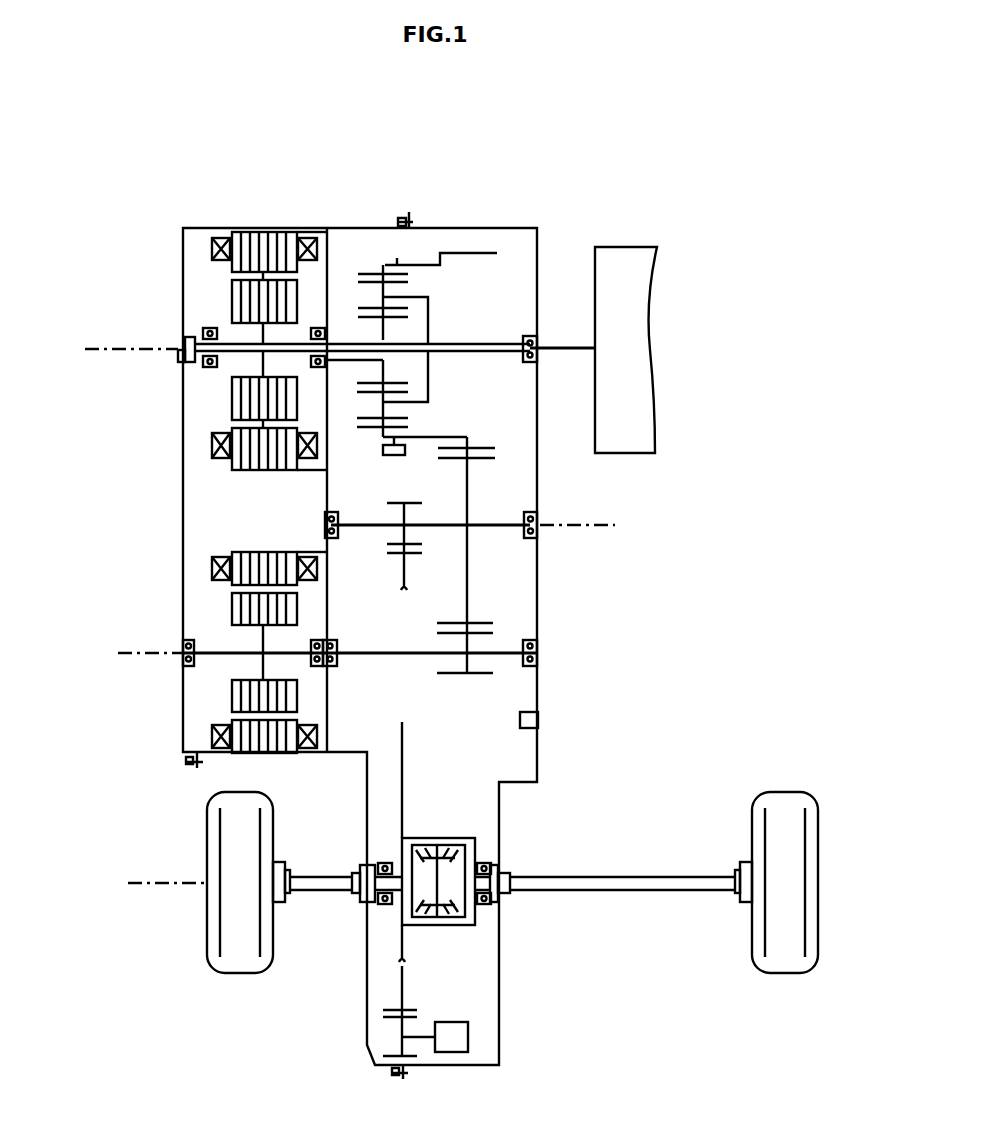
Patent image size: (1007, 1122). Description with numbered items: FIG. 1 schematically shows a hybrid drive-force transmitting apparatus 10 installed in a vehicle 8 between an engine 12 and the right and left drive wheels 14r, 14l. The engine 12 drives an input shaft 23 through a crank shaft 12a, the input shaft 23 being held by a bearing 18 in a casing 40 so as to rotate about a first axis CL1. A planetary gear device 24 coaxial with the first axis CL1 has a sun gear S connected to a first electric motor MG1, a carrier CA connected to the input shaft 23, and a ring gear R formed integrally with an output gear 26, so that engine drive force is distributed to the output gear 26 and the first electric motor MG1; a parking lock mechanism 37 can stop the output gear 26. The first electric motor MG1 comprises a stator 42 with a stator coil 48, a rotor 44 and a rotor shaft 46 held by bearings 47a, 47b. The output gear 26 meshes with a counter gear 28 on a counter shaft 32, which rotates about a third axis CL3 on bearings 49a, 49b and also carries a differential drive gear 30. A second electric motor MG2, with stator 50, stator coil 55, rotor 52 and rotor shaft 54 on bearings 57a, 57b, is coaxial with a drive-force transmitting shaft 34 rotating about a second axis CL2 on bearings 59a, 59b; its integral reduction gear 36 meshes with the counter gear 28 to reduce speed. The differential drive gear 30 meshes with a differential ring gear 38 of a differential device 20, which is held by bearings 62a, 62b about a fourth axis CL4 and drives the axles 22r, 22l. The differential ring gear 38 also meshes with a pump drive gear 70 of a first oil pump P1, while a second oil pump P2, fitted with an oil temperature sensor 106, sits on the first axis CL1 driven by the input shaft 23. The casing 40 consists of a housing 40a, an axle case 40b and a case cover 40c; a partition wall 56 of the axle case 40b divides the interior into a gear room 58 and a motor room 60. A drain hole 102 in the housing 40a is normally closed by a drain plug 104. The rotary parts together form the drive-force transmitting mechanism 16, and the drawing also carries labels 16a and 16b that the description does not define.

The vehicle 8 is at (598, 116).
The drive-force transmitting apparatus 10 is at (414, 160).
The engine 12 is at (655, 450).
The crank shaft 12a is at (561, 345).
The left drive wheel 14l is at (240, 962).
The right drive wheel 14r is at (780, 962).
The drive-force transmitting mechanism 16 is at (510, 284).
The case first portion 16a is at (344, 242).
The case second portion 16b is at (492, 757).
The bearing 18 is at (526, 364).
The differential device 20 is at (505, 930).
The left axle 22l is at (319, 877).
The right axle 22r is at (630, 877).
The input shaft 23 is at (476, 343).
The planetary gear device 24 is at (362, 246).
The output gear 26 is at (440, 255).
The counter gear 28 is at (440, 457).
The differential drive gear 30 is at (410, 504).
The counter shaft 32 is at (455, 528).
The drive-force transmitting shaft 34 is at (361, 660).
The reduction gear 36 is at (458, 676).
The parking lock mechanism 37 is at (392, 457).
The differential ring gear 38 is at (396, 556).
The casing 40 is at (503, 220).
The housing 40a is at (537, 640).
The axle case 40b is at (357, 757).
The case cover 40c is at (182, 438).
The stator 42 is at (262, 250).
The rotor 44 is at (232, 306).
The rotor shaft 46 is at (226, 372).
The bearing 47a is at (208, 367).
The bearing 47b is at (325, 333).
The stator coil 48 is at (221, 238).
The bearing 49a is at (324, 530).
The bearing 49b is at (535, 532).
The stator 50 is at (257, 742).
The rotor 52 is at (240, 698).
The rotor shaft 54 is at (215, 650).
The stator coil 55 is at (212, 735).
The partition wall 56 is at (327, 498).
The bearing 57a is at (182, 650).
The bearing 57b is at (320, 640).
The gear room 58 is at (512, 491).
The bearing 59a is at (338, 652).
The bearing 59b is at (540, 654).
The motor room 60 is at (208, 495).
The bearing 62a is at (385, 905).
The bearing 62b is at (487, 905).
The pump drive gear 70 is at (408, 1062).
The drain hole 102 is at (538, 716).
The drain plug 104 is at (540, 722).
The oil temperature sensor 106 is at (178, 356).
The first electric motor MG1 is at (194, 266).
The second electric motor MG2 is at (190, 585).
The first oil pump P1 is at (435, 1037).
The second oil pump P2 is at (183, 349).
The carrier CA is at (418, 298).
The sun gear S is at (366, 384).
The ring gear R is at (372, 440).
The first axis CL1 is at (92, 356).
The second axis CL2 is at (128, 660).
The third axis CL3 is at (602, 530).
The fourth axis CL4 is at (160, 890).